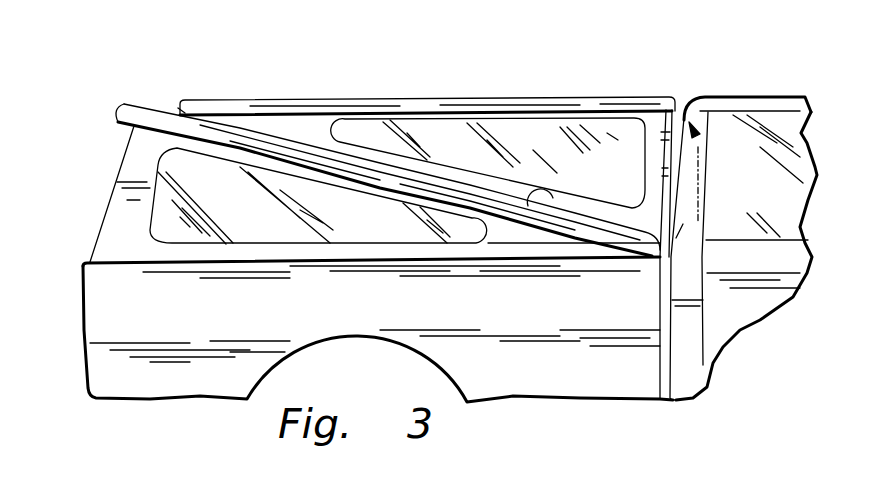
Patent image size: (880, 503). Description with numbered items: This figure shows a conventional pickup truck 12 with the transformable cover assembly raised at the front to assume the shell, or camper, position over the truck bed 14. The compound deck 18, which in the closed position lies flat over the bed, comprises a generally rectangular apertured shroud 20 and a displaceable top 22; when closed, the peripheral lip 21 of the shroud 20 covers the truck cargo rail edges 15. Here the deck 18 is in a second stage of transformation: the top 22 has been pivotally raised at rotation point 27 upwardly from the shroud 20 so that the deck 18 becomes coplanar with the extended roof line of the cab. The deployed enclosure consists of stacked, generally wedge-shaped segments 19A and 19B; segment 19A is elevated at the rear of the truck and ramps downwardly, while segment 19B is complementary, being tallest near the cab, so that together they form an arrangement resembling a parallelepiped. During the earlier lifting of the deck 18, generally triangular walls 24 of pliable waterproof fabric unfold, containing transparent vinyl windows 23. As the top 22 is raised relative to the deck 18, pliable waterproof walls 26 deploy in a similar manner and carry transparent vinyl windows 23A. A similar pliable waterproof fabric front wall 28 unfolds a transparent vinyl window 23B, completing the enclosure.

The pickup truck 12 is at (762, 94).
The truck bed 14 is at (177, 372).
The truck cargo rail edges 15 is at (114, 254).
The compound deck 18 is at (557, 90).
The stacked segment 19A is at (388, 214).
The stacked segment 19B is at (488, 148).
The shroud 20 is at (127, 102).
The peripheral lip 21 is at (556, 205).
The displaceable top 22 is at (182, 100).
The transparent vinyl windows 23 is at (228, 209).
The transparent vinyl windows 23A is at (568, 148).
The transparent vinyl window 23B is at (655, 180).
The triangular walls 24 is at (112, 195).
The pliable waterproof walls 26 is at (302, 124).
The rotation point 27 is at (178, 108).
The front wall 28 is at (645, 147).